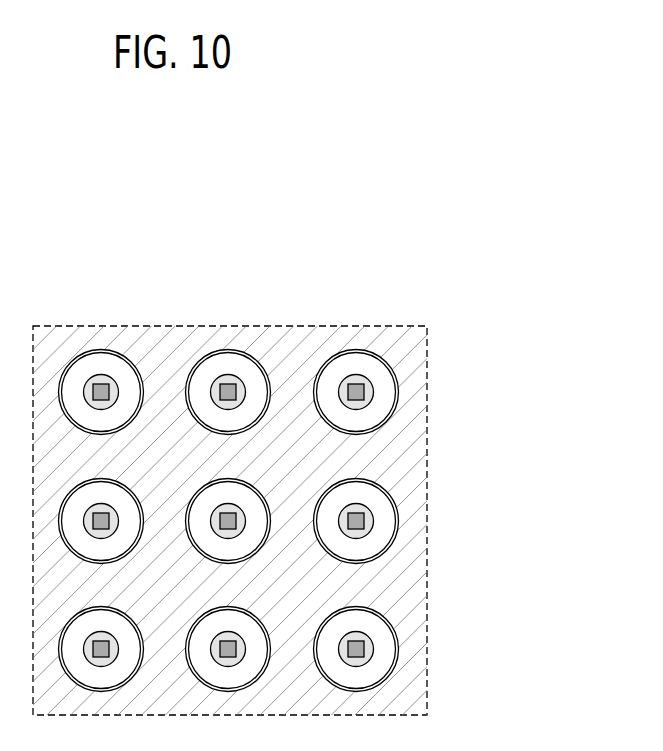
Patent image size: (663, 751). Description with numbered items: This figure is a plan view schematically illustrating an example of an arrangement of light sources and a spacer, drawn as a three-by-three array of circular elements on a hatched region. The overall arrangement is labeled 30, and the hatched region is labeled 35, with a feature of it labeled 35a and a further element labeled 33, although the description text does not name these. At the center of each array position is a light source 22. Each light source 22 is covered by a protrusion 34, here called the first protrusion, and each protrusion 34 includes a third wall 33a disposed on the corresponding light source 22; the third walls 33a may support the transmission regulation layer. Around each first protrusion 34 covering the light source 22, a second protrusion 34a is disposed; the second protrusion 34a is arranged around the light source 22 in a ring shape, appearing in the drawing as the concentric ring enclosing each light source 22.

The light source module 30 is at (92, 252).
The light source 22 is at (374, 521).
The holder 33 is at (119, 352).
The third wall 33a is at (374, 392).
The protrusion 34 is at (205, 408).
The second protrusion 34a is at (243, 334).
The reflective sheet 35 is at (408, 458).
The through hole of reflective sheet 35a is at (363, 362).